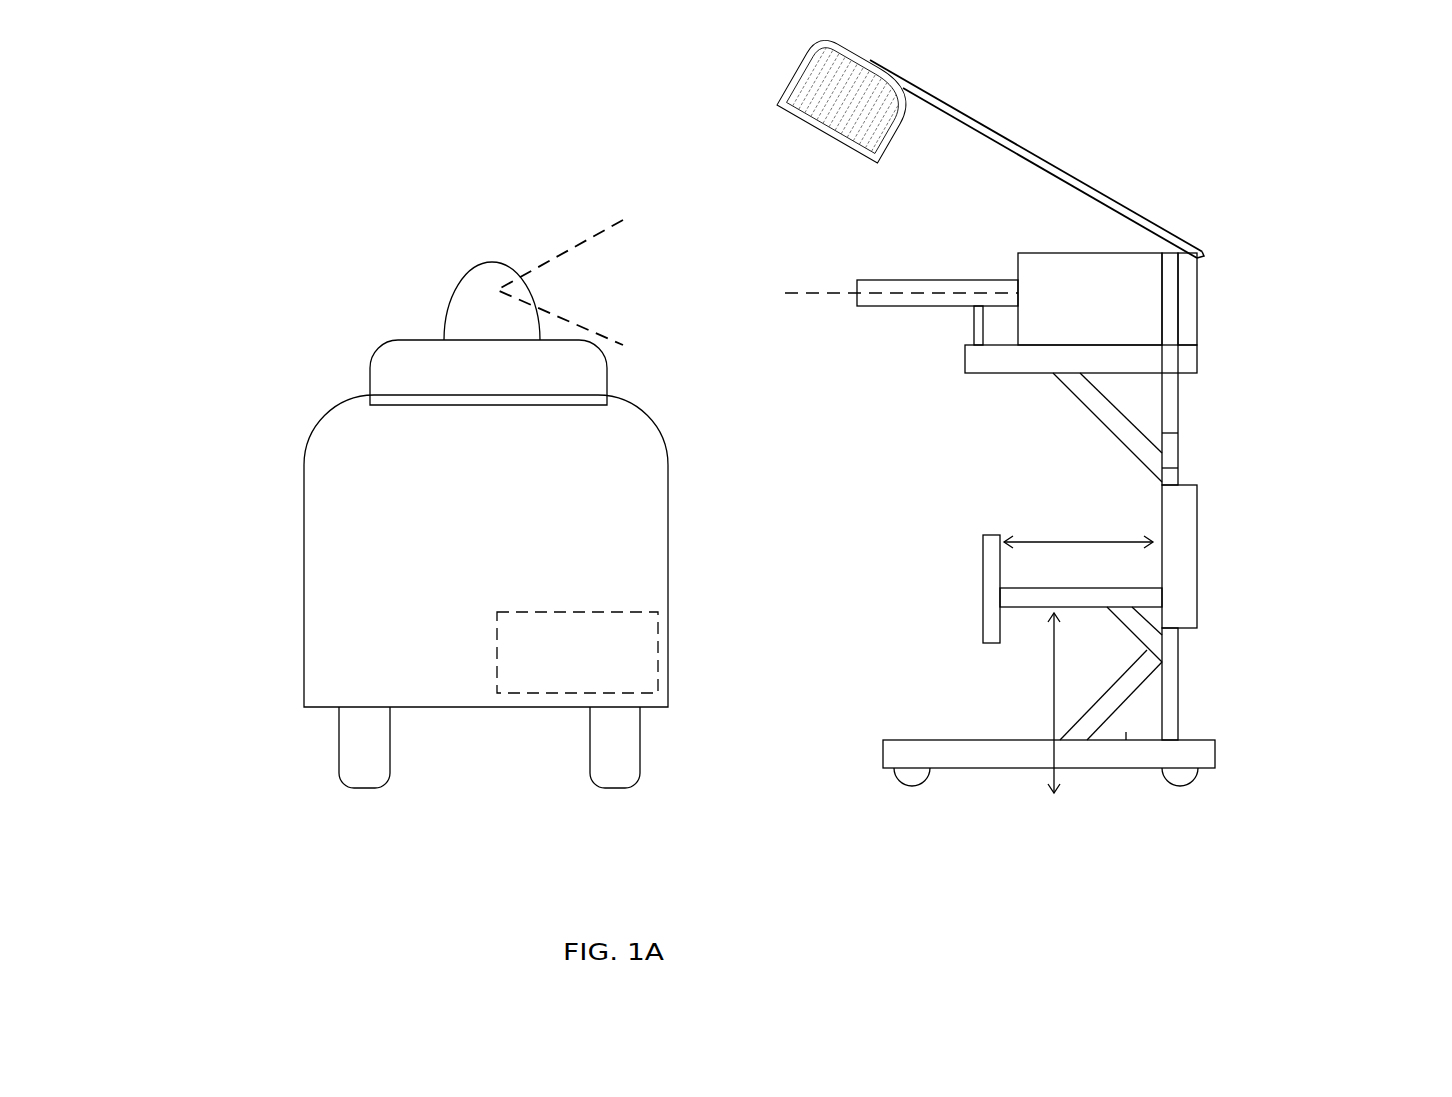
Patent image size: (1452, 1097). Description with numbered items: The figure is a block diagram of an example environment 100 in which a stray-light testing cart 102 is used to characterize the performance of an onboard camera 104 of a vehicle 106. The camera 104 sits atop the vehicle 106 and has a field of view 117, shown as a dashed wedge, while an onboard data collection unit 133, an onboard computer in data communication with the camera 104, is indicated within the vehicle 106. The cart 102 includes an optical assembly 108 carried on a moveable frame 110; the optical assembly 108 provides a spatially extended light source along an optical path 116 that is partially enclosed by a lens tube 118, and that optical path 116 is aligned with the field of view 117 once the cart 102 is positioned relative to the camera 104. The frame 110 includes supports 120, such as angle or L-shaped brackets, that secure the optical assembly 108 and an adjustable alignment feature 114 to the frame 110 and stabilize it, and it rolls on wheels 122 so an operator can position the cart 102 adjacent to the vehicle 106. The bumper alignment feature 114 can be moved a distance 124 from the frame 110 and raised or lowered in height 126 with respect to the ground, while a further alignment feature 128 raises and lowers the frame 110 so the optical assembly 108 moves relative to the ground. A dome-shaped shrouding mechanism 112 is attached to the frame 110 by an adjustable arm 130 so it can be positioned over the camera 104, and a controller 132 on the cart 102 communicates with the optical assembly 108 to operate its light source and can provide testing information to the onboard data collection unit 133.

The environment 100 is at (227, 111).
The stray-light testing cart 102 is at (1220, 178).
The onboard camera 104 is at (493, 262).
The vehicle 106 is at (355, 595).
The optical assembly 108 is at (1197, 282).
The moveable frame 110 is at (1178, 417).
The shrouding mechanism 112 is at (825, 135).
The adjustable alignment feature 114 is at (982, 595).
The optical path 116 is at (802, 297).
The field of view 117 is at (623, 220).
The lens tube 118 is at (925, 279).
The supports 120 is at (1047, 408).
The wheels 122 is at (1192, 755).
The distance 124 is at (1078, 529).
The height 126 is at (1039, 703).
The alignment feature 128 is at (1180, 452).
The adjustable arm 130 is at (950, 102).
The controller 132 is at (1190, 598).
The onboard data collection unit 133 is at (640, 679).